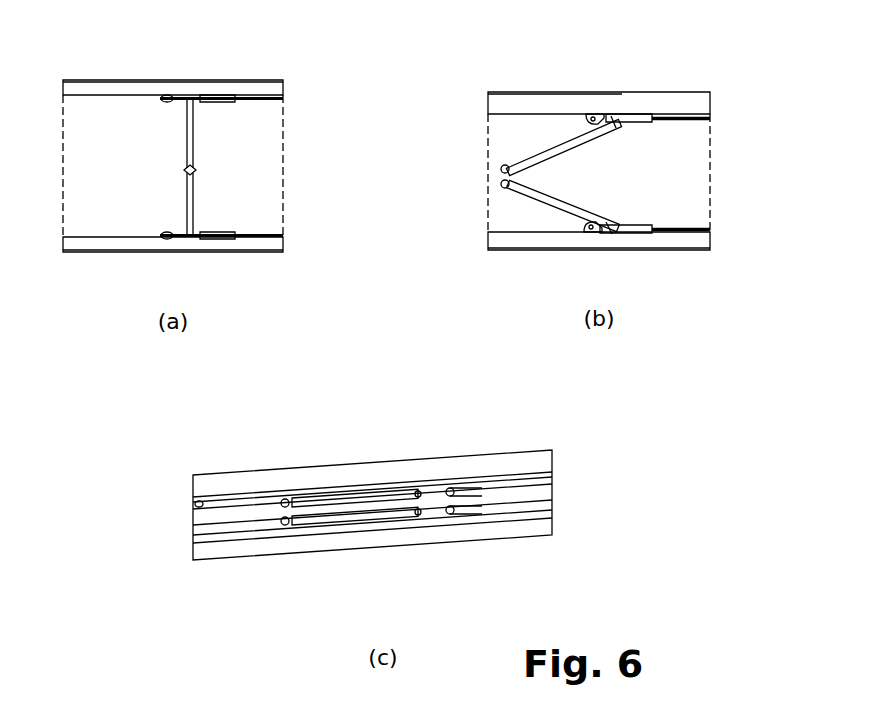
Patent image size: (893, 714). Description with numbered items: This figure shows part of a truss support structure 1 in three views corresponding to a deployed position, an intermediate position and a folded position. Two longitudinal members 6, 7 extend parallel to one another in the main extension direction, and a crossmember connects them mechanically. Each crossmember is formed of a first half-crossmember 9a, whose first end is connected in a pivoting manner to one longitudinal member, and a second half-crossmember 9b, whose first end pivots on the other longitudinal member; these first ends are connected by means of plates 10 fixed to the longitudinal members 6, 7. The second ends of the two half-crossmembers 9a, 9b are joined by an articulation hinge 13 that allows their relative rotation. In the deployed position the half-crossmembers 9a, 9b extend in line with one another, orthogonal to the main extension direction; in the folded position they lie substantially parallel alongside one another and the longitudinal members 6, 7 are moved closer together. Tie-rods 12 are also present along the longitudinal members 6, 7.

The support structure 1 is at (176, 64).
The longitudinal member 6 is at (258, 245).
The longitudinal member 7 is at (100, 92).
The first half-crossmember 9a is at (195, 135).
The second half-crossmember 9b is at (195, 190).
The plate 10 is at (172, 102).
The tie-rod 12 is at (279, 100).
The articulation hinge 13 is at (165, 172).